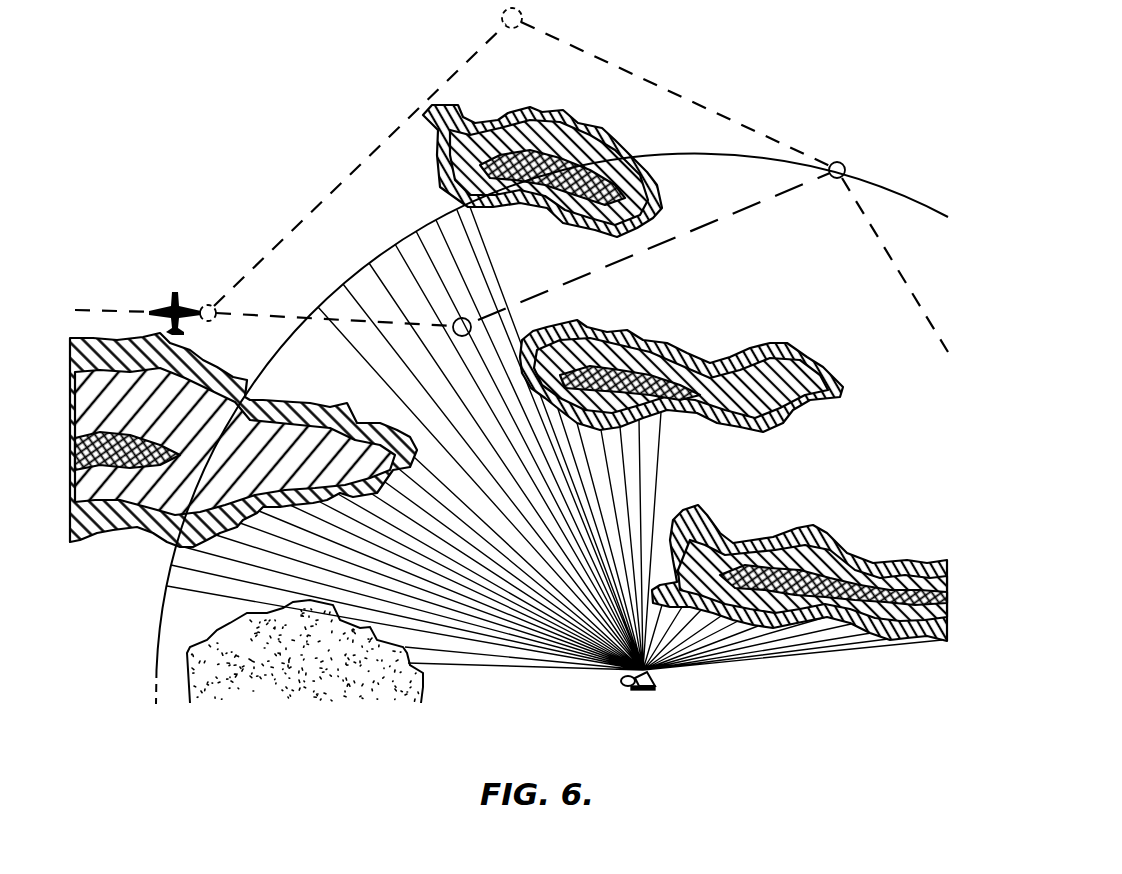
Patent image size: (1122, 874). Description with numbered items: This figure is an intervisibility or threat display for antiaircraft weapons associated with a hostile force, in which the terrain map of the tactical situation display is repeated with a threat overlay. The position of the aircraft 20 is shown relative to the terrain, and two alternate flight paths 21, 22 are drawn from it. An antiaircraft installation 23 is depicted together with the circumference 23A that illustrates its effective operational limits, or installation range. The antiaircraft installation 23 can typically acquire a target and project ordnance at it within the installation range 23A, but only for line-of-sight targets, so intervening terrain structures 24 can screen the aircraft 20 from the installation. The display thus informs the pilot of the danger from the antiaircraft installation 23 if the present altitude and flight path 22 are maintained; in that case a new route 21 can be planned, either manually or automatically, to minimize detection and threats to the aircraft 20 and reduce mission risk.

The aircraft 20 is at (170, 300).
The alternate flight path 21 is at (362, 164).
The flight path 22 is at (285, 318).
The antiaircraft installation 23 is at (659, 688).
The circumference of installation range 23A is at (697, 154).
The terrain features 24 is at (578, 112).